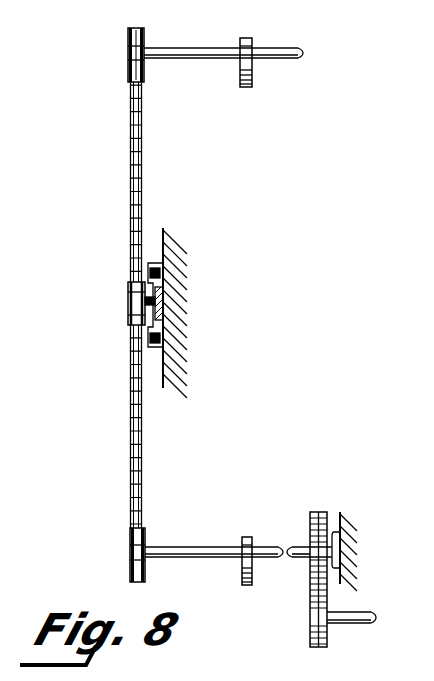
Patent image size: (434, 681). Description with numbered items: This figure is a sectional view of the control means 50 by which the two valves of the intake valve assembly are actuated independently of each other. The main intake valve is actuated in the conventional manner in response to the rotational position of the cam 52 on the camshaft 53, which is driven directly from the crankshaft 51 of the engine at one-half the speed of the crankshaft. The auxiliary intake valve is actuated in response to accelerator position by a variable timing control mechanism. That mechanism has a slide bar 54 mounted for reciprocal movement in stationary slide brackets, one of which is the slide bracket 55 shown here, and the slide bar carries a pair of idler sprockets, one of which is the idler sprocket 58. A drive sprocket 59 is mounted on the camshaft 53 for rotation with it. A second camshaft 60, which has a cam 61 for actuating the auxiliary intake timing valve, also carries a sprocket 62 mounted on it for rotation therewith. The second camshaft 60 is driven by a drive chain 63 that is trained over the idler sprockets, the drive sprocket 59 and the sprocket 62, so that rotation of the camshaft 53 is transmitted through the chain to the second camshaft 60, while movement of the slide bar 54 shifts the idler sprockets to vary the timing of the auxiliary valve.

The control means 50 is at (130, 408).
The crankshaft 51 is at (353, 622).
The cam 52 is at (247, 534).
The camshaft 53 is at (188, 558).
The slide bar 54 is at (160, 305).
The stationary slide bracket 55 is at (157, 262).
The idler sprocket 58 is at (143, 303).
The drive sprocket 59 is at (130, 552).
The second camshaft 60 is at (273, 60).
The cam 61 is at (250, 42).
The sprocket 62 is at (128, 60).
The drive chain 63 is at (130, 157).